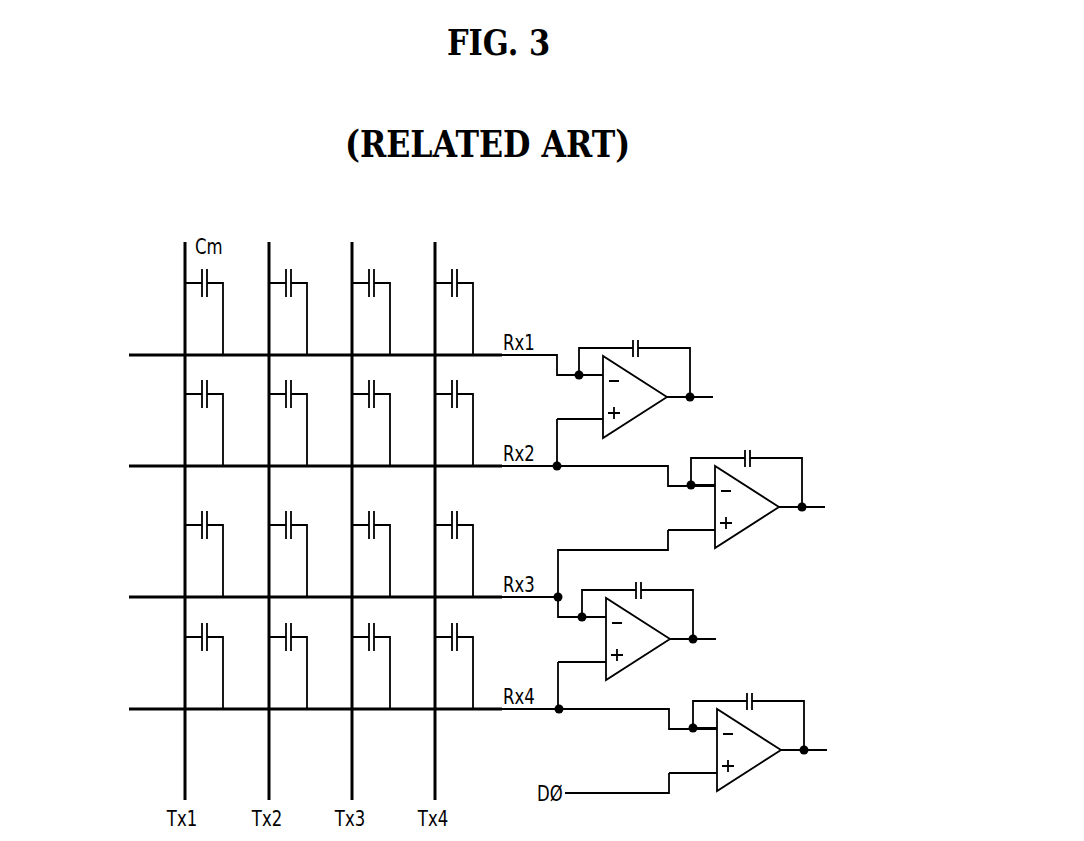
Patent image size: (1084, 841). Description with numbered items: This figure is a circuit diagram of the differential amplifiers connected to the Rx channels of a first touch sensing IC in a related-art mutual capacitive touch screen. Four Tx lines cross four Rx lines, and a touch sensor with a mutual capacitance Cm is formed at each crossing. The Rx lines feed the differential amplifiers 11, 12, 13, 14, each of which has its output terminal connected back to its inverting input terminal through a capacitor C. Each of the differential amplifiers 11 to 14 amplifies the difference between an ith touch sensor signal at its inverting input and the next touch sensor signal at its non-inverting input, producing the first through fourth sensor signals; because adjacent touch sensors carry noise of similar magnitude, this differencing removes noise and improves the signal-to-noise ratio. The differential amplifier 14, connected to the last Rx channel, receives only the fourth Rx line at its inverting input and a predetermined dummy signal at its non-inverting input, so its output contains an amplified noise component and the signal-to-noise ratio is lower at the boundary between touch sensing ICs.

The differential amplifier 11 is at (652, 408).
The differential amplifier 12 is at (764, 518).
The differential amplifier 13 is at (655, 650).
The differential amplifier 14 is at (766, 761).